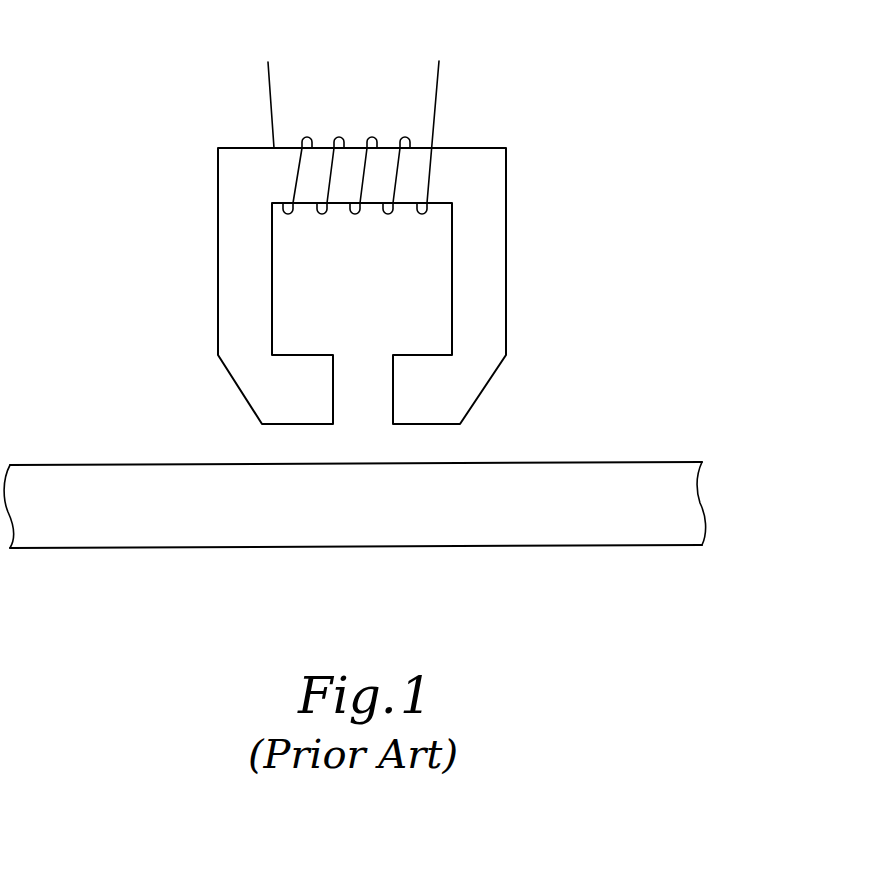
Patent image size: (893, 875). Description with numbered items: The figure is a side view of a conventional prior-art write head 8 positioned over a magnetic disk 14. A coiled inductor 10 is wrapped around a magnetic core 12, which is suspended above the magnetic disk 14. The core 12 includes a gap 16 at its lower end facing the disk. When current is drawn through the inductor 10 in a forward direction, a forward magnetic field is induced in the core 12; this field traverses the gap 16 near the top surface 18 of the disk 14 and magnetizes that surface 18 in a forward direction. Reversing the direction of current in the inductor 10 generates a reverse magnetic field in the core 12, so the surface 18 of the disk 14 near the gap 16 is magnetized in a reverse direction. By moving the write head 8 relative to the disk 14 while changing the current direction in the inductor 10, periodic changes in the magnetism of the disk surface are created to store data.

The write head 8 is at (158, 127).
The coiled inductor 10 is at (439, 89).
The magnetic core 12 is at (506, 223).
The magnetic disk 14 is at (701, 490).
The gap 16 is at (360, 393).
The top surface 18 is at (363, 463).